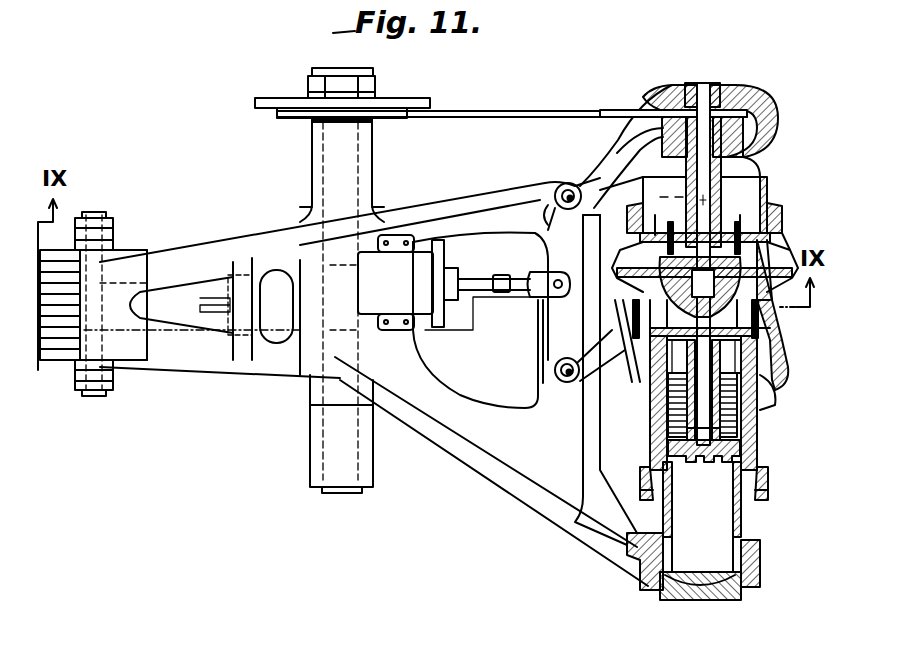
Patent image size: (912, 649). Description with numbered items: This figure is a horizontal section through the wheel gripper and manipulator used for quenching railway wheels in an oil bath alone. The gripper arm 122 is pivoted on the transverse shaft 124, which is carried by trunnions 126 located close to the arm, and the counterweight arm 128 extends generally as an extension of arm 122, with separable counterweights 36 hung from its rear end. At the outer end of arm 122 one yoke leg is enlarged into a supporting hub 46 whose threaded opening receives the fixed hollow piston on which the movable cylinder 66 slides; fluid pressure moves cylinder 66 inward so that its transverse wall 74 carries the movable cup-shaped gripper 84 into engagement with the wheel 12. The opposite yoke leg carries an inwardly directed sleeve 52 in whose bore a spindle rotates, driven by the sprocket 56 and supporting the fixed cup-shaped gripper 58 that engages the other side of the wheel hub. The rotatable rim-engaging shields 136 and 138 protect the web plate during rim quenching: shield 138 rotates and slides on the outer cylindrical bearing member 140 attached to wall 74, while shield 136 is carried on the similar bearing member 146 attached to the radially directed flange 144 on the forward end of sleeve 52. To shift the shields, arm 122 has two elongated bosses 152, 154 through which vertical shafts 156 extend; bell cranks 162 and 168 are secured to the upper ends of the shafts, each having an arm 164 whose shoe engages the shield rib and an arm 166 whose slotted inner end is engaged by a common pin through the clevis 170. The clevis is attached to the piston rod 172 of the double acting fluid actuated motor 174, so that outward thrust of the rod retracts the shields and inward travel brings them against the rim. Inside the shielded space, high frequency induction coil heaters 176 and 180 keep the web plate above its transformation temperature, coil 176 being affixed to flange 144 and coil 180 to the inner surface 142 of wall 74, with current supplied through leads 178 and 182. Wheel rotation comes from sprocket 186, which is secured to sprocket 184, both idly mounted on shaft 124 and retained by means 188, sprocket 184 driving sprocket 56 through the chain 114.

The wheel 12 is at (784, 310).
The separable counterweights 36 is at (132, 370).
The supporting hub 46 is at (758, 562).
The sleeve 52 is at (760, 148).
The sprocket 56 is at (745, 108).
The cup-shaped gripper 58 is at (732, 225).
The movable cylinder 66 is at (757, 440).
The transverse wall 74 is at (752, 405).
The movable wheel mounting cup-shaped gripper 84 is at (650, 392).
The chain 114 is at (470, 115).
The arm 122 is at (508, 484).
The transverse shaft 124 is at (330, 494).
The trunnions 126 is at (372, 170).
The counterweight arm 128 is at (170, 258).
The shield 136 is at (780, 244).
The retractable shield 138 is at (556, 378).
The outer cylindrical bearing member 140 is at (777, 402).
The inner surface 142 is at (783, 335).
The radially directed flange 144 is at (777, 212).
The cylindrical bearing member 146 is at (772, 180).
The elongated boss 152 is at (560, 185).
The elongated boss 154 is at (556, 370).
The vertical shafts 156 is at (570, 184).
The bell crank 162 is at (538, 190).
The arm 164 is at (622, 122).
The arm 166 is at (540, 236).
The bell crank 168 is at (548, 340).
The clevis 170 is at (535, 296).
The piston rod 172 is at (470, 283).
The double acting fluid actuated motor 174 is at (412, 252).
The high frequency induction coil heater 176 is at (635, 275).
The leads 178 is at (660, 214).
The high frequency induction coil heater 180 is at (637, 340).
The leads 182 is at (583, 372).
The sprocket 184 is at (300, 119).
The sprocket 186 is at (258, 102).
The retaining means 188 is at (330, 73).